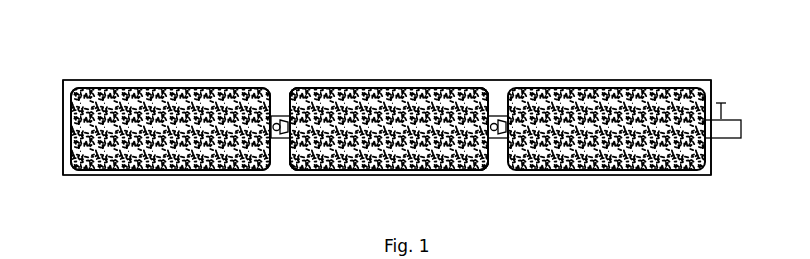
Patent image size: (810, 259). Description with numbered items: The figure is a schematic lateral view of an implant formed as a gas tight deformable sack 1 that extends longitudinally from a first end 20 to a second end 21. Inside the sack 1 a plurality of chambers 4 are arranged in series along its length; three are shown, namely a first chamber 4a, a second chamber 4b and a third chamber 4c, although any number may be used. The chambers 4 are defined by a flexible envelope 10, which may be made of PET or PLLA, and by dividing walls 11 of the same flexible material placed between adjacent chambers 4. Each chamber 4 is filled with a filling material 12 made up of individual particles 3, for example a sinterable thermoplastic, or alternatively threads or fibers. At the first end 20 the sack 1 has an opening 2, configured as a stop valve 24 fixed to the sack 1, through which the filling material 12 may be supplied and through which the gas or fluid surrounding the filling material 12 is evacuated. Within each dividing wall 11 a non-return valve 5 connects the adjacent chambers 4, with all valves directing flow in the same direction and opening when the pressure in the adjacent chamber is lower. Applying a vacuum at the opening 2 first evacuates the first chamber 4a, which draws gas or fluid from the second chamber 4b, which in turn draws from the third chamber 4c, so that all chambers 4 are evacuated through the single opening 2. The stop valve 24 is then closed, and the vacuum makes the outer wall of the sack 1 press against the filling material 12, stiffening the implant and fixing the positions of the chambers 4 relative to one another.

The gas tight deformable sack 1 is at (573, 68).
The opening 2 is at (716, 132).
The individual particles 3 is at (138, 143).
The chambers 4 is at (410, 80).
The first chamber 4a is at (640, 80).
The second chamber 4b is at (323, 80).
The third chamber 4c is at (135, 78).
The non-return valve 5 is at (272, 131).
The envelope 10 is at (356, 78).
The dividing walls 11 is at (271, 96).
The filling material 12 is at (333, 153).
The first end 20 is at (702, 90).
The second end 21 is at (57, 163).
The stop valve 24 is at (723, 120).